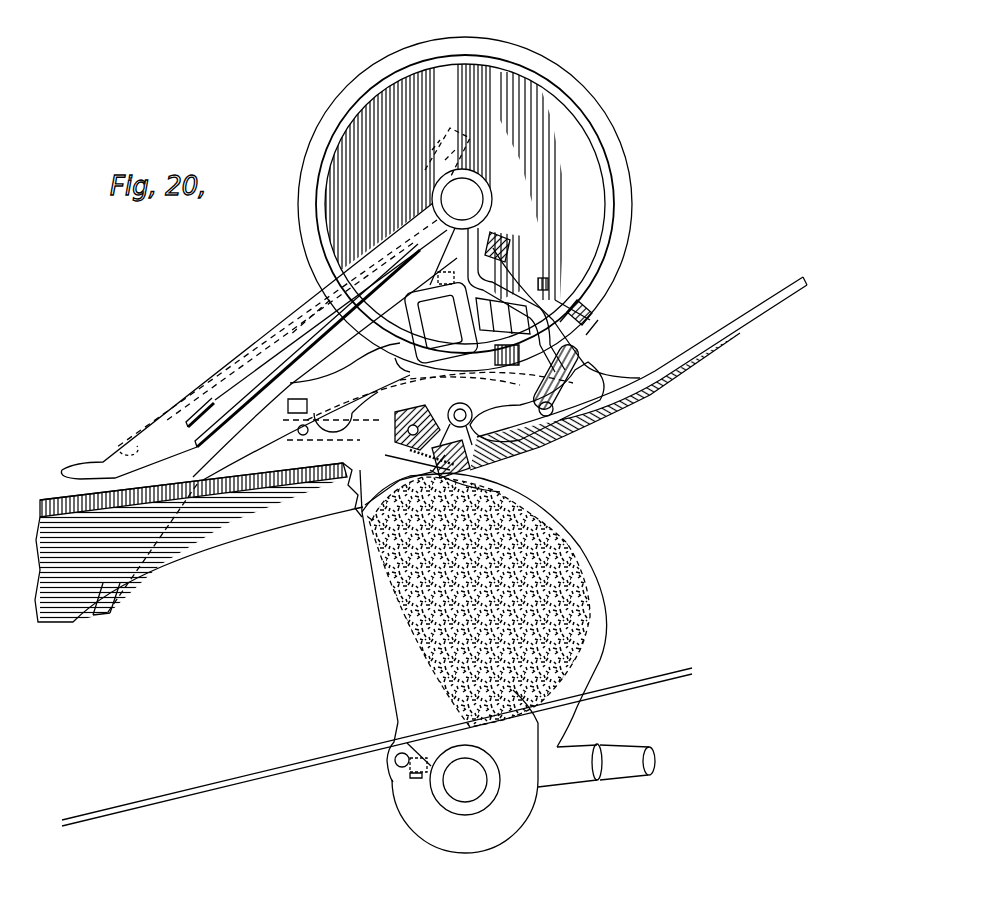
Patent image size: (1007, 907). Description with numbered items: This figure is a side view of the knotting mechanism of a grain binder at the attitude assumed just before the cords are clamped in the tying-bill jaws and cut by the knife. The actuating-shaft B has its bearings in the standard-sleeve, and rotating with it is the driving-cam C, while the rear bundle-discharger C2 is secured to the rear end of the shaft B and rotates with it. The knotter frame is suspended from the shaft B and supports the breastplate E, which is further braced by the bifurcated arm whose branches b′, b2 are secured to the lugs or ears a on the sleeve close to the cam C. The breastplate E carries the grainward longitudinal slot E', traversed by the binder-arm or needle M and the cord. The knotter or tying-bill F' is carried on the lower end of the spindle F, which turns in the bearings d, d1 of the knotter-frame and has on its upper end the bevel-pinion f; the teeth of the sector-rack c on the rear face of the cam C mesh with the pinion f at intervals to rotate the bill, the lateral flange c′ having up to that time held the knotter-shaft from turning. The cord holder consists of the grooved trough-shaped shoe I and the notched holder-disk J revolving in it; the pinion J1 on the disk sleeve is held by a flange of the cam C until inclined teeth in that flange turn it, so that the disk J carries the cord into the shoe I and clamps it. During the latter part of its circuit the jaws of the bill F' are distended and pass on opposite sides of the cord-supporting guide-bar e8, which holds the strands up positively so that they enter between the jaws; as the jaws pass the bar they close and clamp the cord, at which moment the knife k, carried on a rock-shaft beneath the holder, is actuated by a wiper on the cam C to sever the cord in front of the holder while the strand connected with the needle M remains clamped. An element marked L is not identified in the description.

The actuating-shaft B is at (465, 204).
The rear bundle-discharger C2 is at (220, 367).
The brace branch b2 is at (262, 412).
The brace branch b′ is at (200, 416).
The breastplate E is at (199, 542).
The segment-gear or sector-rack c is at (191, 491).
The cord-supporting guide-bar e8 is at (484, 610).
The lever bar L is at (578, 398).
The lugs or ears a is at (509, 286).
The bearing d is at (538, 276).
The lateral flange c′ is at (581, 286).
The spindle F is at (442, 256).
The bevel-pinion f is at (441, 322).
The driving-cam C is at (503, 331).
The pinion J1 is at (551, 348).
The bearing d1 is at (350, 363).
The longitudinal slot E' is at (409, 427).
The binder-arm or needle M is at (568, 390).
The shoe I is at (537, 402).
The holder-disk J is at (459, 421).
The knife k is at (478, 433).
The knotter or tying-bill F' is at (440, 459).